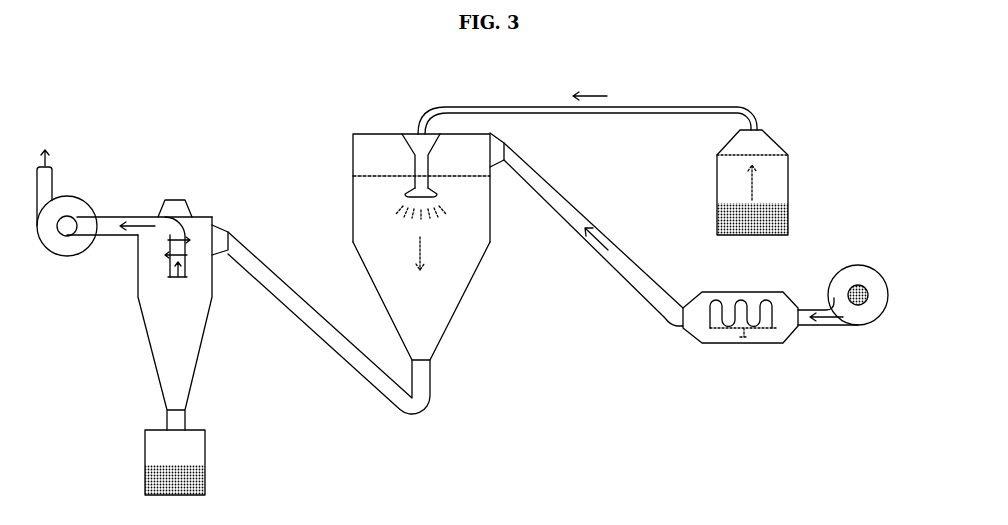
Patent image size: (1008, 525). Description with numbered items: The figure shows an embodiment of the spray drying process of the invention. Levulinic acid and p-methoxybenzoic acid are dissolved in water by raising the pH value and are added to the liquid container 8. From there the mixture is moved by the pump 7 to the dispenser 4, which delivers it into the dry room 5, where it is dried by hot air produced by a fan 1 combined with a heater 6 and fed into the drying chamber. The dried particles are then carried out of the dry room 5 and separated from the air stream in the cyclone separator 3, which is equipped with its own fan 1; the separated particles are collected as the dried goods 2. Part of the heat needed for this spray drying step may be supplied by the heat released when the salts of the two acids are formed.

The fan 1 is at (462, 259).
The dried goods 2 is at (191, 462).
The cyclone separator 3 is at (192, 315).
The dispenser 4 is at (538, 167).
The dry room 5 is at (421, 283).
The heater 6 is at (740, 340).
The pump 7 is at (777, 180).
The liquid container 8 is at (781, 217).